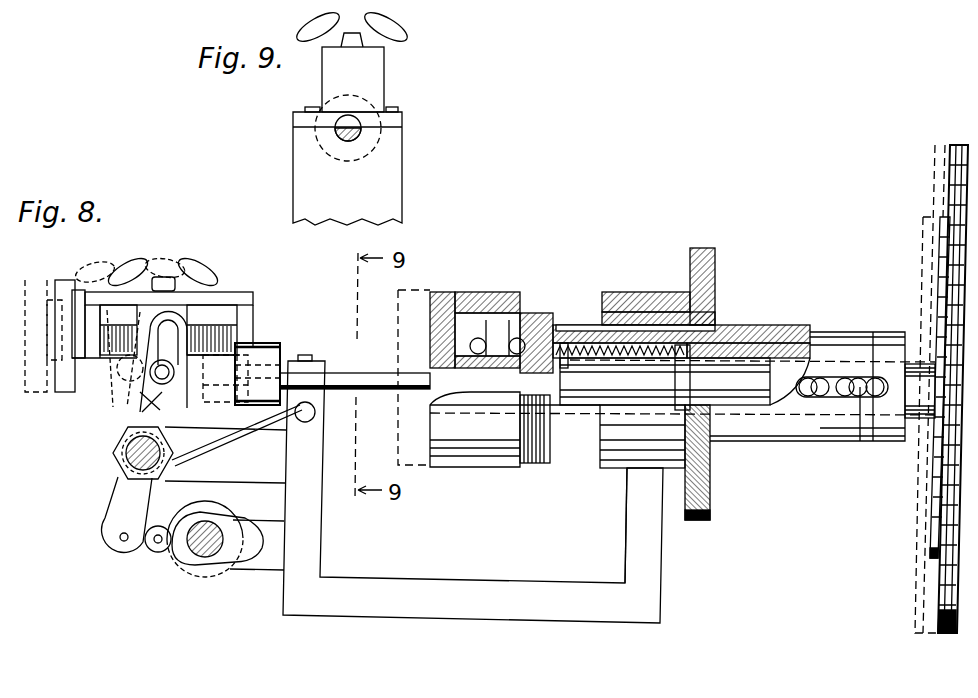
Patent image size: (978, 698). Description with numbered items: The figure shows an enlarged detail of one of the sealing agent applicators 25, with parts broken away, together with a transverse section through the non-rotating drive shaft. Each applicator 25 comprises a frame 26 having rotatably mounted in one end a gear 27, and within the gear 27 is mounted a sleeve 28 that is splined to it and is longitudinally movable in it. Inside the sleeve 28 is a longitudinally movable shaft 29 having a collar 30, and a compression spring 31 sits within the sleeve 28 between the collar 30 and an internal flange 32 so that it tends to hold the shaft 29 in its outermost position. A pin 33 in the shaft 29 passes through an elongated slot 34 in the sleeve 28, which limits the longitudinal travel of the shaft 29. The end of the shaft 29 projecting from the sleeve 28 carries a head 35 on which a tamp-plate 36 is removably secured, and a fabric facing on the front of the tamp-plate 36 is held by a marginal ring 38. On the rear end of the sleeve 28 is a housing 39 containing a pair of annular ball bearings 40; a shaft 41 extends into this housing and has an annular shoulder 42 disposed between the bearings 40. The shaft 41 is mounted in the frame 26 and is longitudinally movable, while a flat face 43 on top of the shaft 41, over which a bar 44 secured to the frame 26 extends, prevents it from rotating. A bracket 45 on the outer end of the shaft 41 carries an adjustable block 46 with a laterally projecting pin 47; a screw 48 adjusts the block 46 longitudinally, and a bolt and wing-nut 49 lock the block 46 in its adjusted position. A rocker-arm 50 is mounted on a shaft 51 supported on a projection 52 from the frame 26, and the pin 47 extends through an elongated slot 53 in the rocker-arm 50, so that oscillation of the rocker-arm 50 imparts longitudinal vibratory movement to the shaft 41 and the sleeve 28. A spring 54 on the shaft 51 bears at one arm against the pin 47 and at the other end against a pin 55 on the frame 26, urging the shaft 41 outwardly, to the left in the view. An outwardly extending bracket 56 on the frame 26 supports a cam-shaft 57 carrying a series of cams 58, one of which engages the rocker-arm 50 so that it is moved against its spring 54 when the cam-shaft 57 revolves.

In FIG. 8, the applicator 25 is at (627, 583).
In FIG. 9, the frame 26 is at (402, 165).
In FIG. 8, the frame 26 is at (415, 565).
In FIG. 8, the gear 27 is at (715, 285).
In FIG. 8, the sleeve 28 is at (808, 332).
In FIG. 8, the shaft 29 is at (912, 364).
In FIG. 8, the collar 30 is at (690, 380).
In FIG. 8, the compression spring 31 is at (583, 343).
In FIG. 8, the internal flange 32 is at (558, 325).
In FIG. 8, the pin 33 is at (845, 397).
In FIG. 8, the elongated slot 34 is at (866, 398).
In FIG. 8, the head 35 is at (932, 545).
In FIG. 8, the tamp-plate 36 is at (950, 163).
In FIG. 8, the marginal ring 38 is at (950, 635).
In FIG. 8, the housing 39 is at (528, 292).
In FIG. 8, the annular ball bearings 40 is at (517, 338).
In FIG. 9, the shaft 41 is at (349, 140).
In FIG. 8, the shaft 41 is at (414, 392).
In FIG. 8, the annular shoulder 42 is at (480, 378).
In FIG. 9, the flat face 43 is at (349, 120).
In FIG. 9, the bar 44 is at (402, 115).
In FIG. 8, the bracket 45 is at (253, 302).
In FIG. 8, the adjustable block 46 is at (175, 315).
In FIG. 8, the pin 47 is at (160, 374).
In FIG. 8, the screw 48 is at (110, 353).
In FIG. 9, the bolt and wing-nut 49 is at (395, 28).
In FIG. 8, the bolt and wing-nut 49 is at (195, 265).
In FIG. 8, the rocker-arm 50 is at (116, 498).
In FIG. 8, the shaft 51 is at (128, 462).
In FIG. 8, the projection 52 is at (225, 474).
In FIG. 8, the elongated slot 53 is at (148, 400).
In FIG. 8, the spring 54 is at (182, 462).
In FIG. 8, the pin 55 is at (305, 422).
In FIG. 8, the bracket 56 is at (270, 570).
In FIG. 8, the cam-shaft 57 is at (200, 548).
In FIG. 8, the cam 58 is at (165, 552).